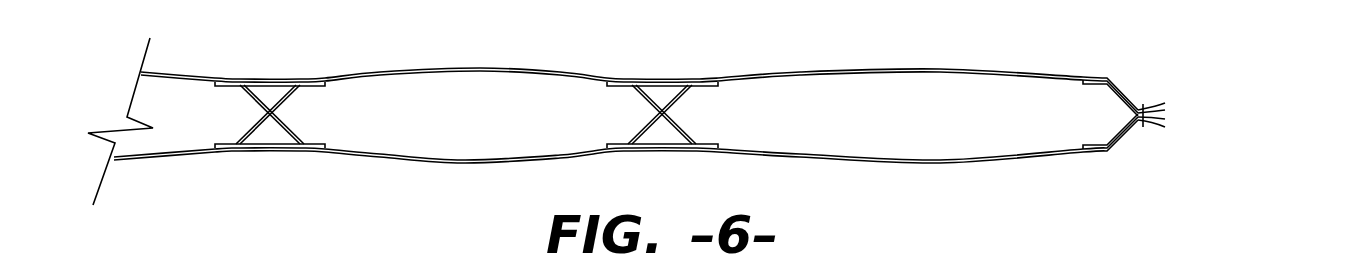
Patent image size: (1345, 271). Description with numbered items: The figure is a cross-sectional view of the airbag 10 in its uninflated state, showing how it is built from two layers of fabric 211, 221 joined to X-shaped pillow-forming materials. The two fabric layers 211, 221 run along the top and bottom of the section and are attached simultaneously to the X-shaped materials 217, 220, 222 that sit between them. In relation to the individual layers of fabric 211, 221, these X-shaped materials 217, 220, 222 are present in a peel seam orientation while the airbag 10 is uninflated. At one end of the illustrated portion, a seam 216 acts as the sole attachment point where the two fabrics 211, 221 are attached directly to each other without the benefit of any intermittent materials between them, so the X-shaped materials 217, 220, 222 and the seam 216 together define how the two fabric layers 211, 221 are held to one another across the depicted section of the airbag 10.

The airbag 10 is at (702, 115).
The layer of fabric 211 is at (438, 68).
The layer of fabric 221 is at (432, 165).
The X-shaped material 220 is at (224, 85).
The X-shaped material 222 is at (316, 87).
The X-shaped material 217 is at (1093, 88).
The seam 216 is at (1172, 92).